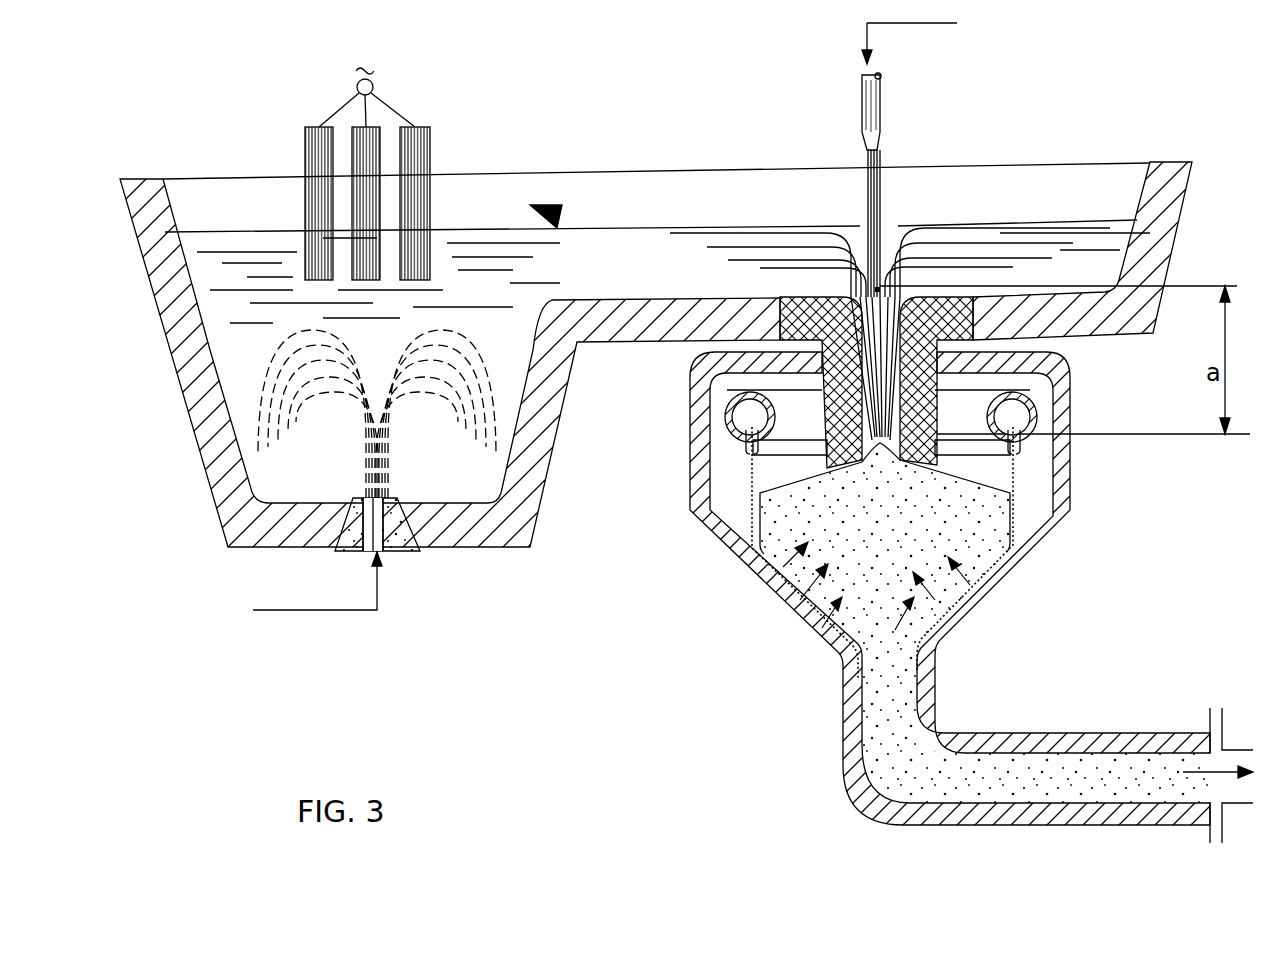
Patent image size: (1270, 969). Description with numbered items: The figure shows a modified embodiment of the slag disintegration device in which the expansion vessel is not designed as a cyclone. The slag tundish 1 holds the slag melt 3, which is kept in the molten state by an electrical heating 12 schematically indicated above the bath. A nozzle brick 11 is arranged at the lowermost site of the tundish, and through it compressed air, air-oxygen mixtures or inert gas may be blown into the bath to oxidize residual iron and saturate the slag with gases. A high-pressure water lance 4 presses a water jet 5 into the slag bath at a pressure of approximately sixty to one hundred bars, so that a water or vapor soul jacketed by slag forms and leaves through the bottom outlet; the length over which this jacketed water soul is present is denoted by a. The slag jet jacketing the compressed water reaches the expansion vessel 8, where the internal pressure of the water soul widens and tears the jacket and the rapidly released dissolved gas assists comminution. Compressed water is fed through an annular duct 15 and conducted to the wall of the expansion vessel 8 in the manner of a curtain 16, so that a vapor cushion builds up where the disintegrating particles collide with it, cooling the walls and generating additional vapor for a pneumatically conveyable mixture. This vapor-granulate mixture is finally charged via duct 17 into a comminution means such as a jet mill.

The slag tundish 1 is at (1158, 232).
The slag melt 3 is at (680, 272).
The high-pressure water lance 4 is at (875, 115).
The water jet 5 is at (872, 192).
The expansion vessel 8 is at (1027, 547).
The nozzle brick 11 is at (403, 553).
The electrical heating 12 is at (413, 148).
The annular duct 15 is at (750, 415).
The curtain 16 is at (750, 473).
The duct 17 is at (1050, 780).